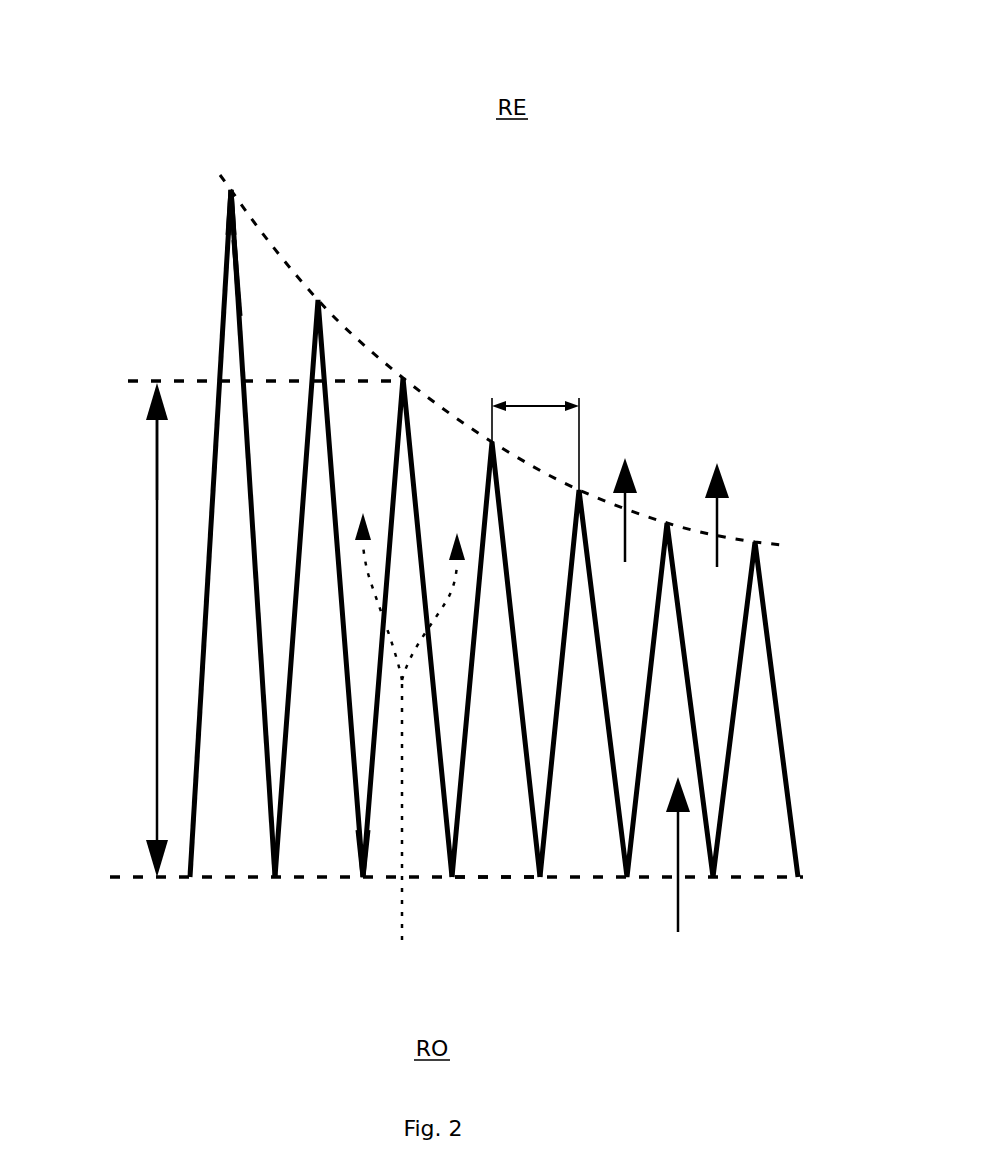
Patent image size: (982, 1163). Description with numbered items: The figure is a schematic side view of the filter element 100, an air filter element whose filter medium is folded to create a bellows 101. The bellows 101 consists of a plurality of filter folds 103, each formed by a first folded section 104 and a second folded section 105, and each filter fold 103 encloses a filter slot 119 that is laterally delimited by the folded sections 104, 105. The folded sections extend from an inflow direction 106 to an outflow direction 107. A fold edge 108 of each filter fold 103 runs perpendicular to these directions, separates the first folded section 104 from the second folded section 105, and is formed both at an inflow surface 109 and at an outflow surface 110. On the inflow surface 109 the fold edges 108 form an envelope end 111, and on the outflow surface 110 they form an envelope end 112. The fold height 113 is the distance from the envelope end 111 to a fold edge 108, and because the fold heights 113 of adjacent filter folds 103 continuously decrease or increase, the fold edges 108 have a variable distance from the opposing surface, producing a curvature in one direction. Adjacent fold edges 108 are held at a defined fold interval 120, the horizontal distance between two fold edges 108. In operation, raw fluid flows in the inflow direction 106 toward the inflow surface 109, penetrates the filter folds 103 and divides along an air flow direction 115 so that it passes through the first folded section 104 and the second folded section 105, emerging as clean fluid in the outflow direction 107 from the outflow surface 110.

The filter element 100 is at (119, 105).
The bellows 101 is at (789, 726).
The filter fold 103 is at (244, 250).
The first folded section 104 is at (221, 333).
The second folded section 105 is at (240, 316).
The inflow direction 106 is at (683, 897).
The outflow direction 107 is at (627, 508).
The fold edge 108 is at (228, 190).
The inflow surface 109 is at (293, 884).
The outflow surface 110 is at (464, 408).
The envelope end 111 is at (498, 877).
The envelope end 112 is at (375, 353).
The fold height 113 is at (157, 570).
The air flow direction 115 is at (402, 912).
The filter slot 119 is at (227, 437).
The fold interval 120 is at (540, 398).